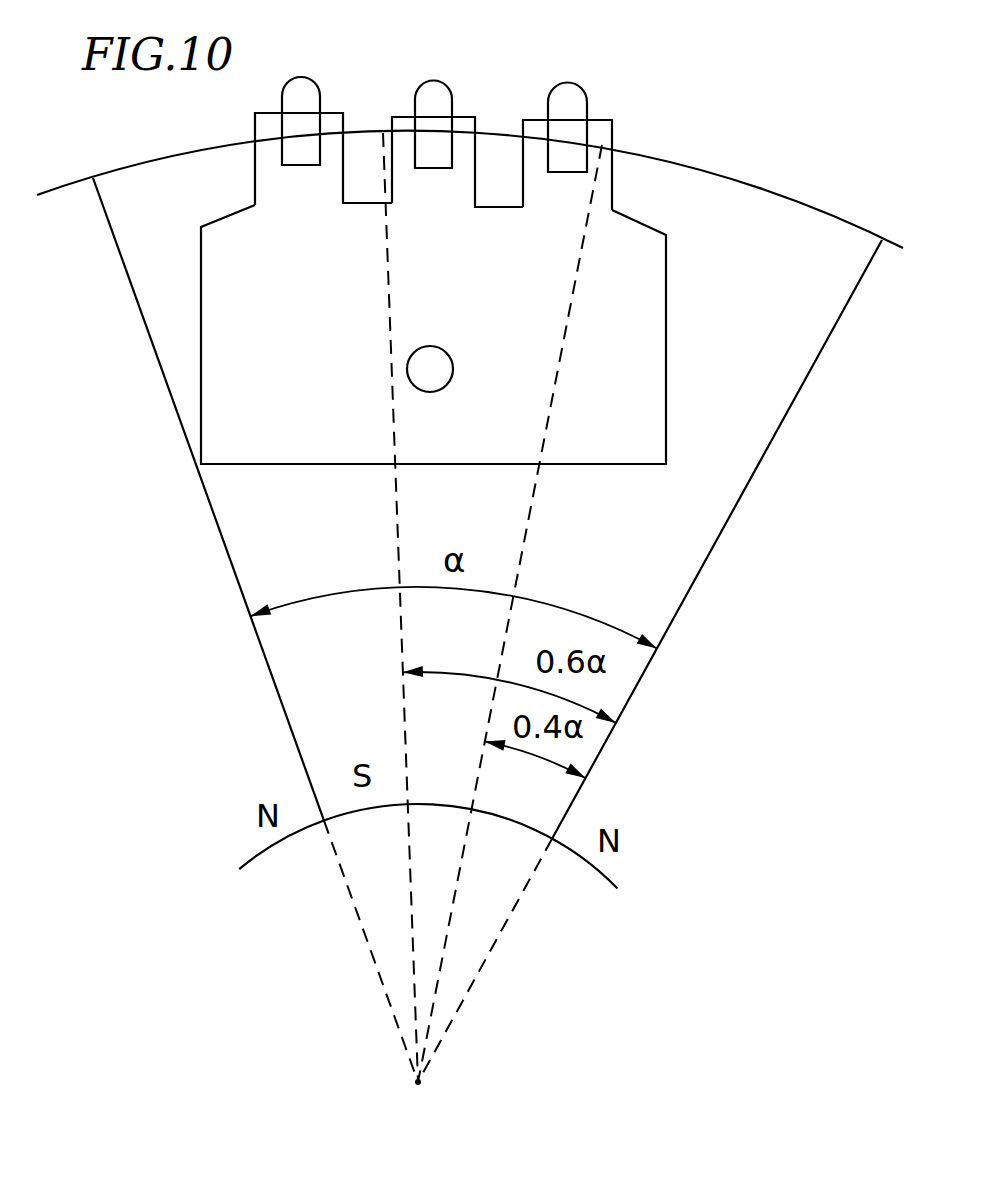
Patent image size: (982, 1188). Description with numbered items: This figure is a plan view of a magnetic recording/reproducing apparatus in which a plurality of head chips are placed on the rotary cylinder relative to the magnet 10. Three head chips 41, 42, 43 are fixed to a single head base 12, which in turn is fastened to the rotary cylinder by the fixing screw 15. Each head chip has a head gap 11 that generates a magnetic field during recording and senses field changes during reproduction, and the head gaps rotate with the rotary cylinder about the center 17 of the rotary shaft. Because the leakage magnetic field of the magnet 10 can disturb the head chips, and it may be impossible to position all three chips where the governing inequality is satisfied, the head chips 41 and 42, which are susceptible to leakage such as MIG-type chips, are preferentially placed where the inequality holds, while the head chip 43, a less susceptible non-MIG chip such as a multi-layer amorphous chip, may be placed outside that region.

The magnet 10 is at (800, 202).
The head gap 11 is at (302, 92).
The head base 12 is at (665, 415).
The fixing screw 15 is at (453, 370).
The center of the rotary shaft 17 is at (424, 1082).
The head chip 41 is at (565, 172).
The head chip 42 is at (432, 170).
The head chip 43 is at (300, 168).